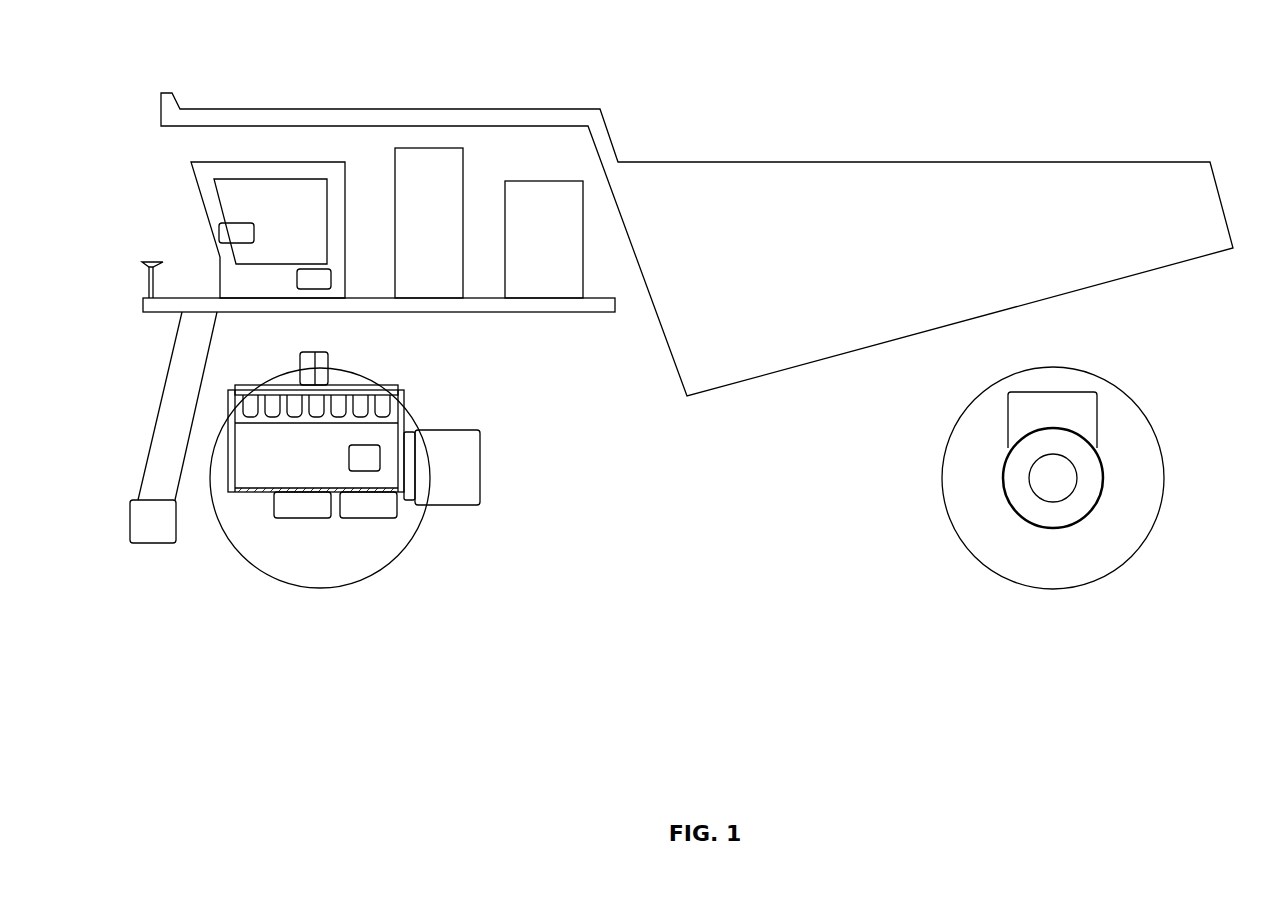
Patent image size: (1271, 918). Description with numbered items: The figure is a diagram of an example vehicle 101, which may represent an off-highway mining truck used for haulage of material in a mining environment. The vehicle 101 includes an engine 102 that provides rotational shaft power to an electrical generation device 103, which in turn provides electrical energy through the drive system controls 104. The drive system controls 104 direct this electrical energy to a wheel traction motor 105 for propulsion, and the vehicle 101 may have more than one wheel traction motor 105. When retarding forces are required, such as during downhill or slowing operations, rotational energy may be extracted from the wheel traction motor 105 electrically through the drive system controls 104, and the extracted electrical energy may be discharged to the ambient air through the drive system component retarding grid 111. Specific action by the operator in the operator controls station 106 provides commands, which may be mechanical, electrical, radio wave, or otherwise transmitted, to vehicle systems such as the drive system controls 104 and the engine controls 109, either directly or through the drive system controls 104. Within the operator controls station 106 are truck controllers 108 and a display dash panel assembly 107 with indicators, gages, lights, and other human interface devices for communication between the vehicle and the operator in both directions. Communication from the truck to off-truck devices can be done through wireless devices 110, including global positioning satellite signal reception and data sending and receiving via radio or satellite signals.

The vehicle 101 is at (507, 727).
The engine 102 is at (257, 482).
The electrical generation device 103 is at (462, 440).
The drive system controls 104 is at (430, 168).
The wheel traction motor 105 is at (1057, 513).
The operator controls station 106 is at (258, 167).
The display dash panel assembly 107 is at (233, 228).
The truck controllers 108 is at (310, 277).
The engine controls 109 is at (360, 459).
The wireless devices 110 is at (151, 263).
The drive system component retarding grid 111 is at (525, 228).